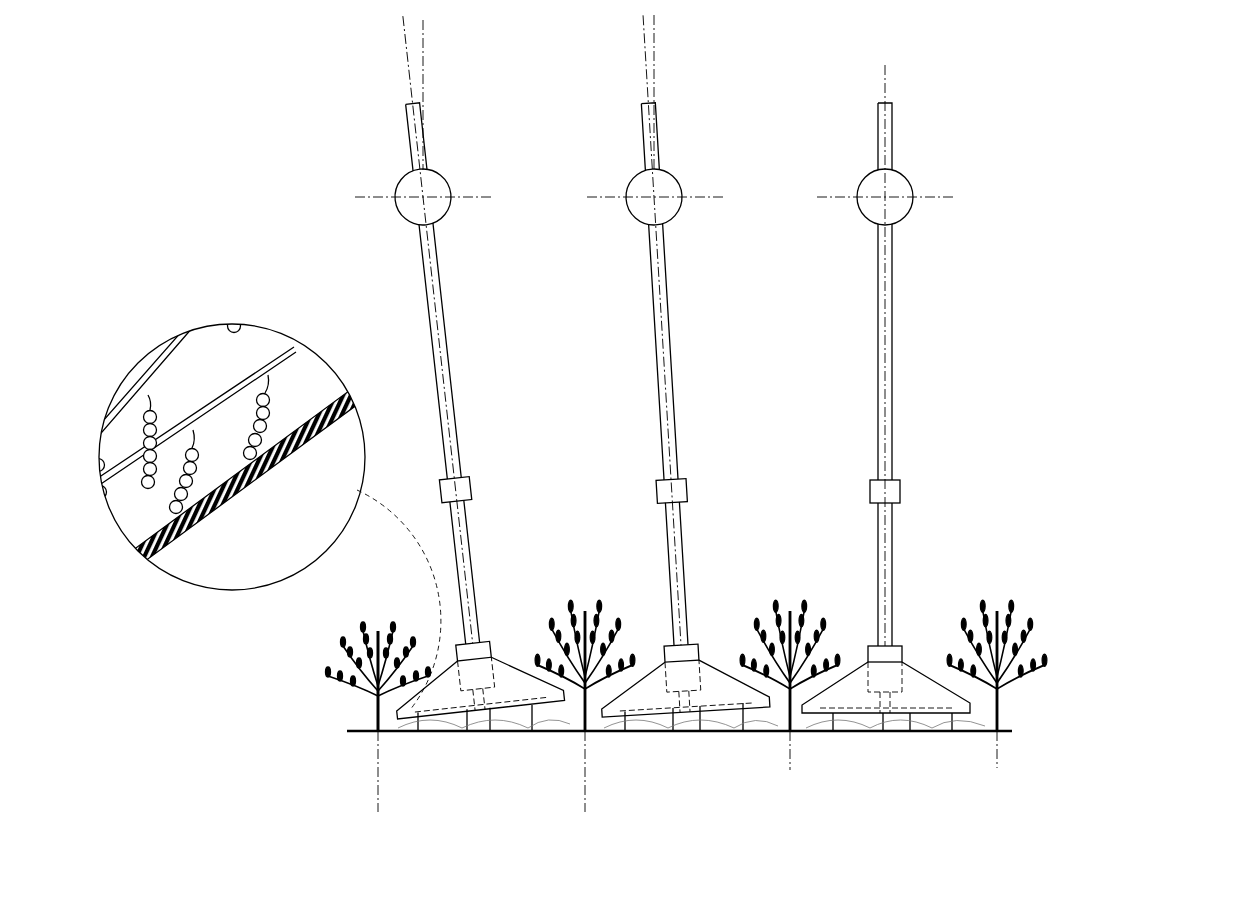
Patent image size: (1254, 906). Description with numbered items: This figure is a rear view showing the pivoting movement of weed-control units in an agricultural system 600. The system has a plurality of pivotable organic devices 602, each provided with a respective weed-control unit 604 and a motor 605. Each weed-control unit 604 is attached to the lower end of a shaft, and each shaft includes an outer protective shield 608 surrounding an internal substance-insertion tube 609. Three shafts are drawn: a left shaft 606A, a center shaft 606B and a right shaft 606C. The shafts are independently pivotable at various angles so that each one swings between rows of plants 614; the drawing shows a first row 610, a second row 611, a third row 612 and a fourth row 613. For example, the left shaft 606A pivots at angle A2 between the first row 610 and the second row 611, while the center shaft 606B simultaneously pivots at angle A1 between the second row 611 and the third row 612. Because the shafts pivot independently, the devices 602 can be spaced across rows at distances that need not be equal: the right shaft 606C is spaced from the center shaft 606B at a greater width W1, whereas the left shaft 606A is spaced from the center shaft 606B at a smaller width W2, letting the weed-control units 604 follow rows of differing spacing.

The agricultural system 600 is at (1112, 92).
The pivotable organic device 602 is at (900, 158).
The weed-control unit 604 is at (955, 638).
The motor 605 is at (923, 735).
The left shaft 606A is at (445, 357).
The center shaft 606B is at (672, 368).
The right shaft 606C is at (955, 389).
The outer protective shield 608 is at (949, 690).
The internal substance-insertion tube 609 is at (895, 240).
The first row 610 is at (368, 633).
The second row 611 is at (594, 610).
The third row 612 is at (800, 610).
The fourth row 613 is at (1007, 610).
The plant 614 is at (277, 403).